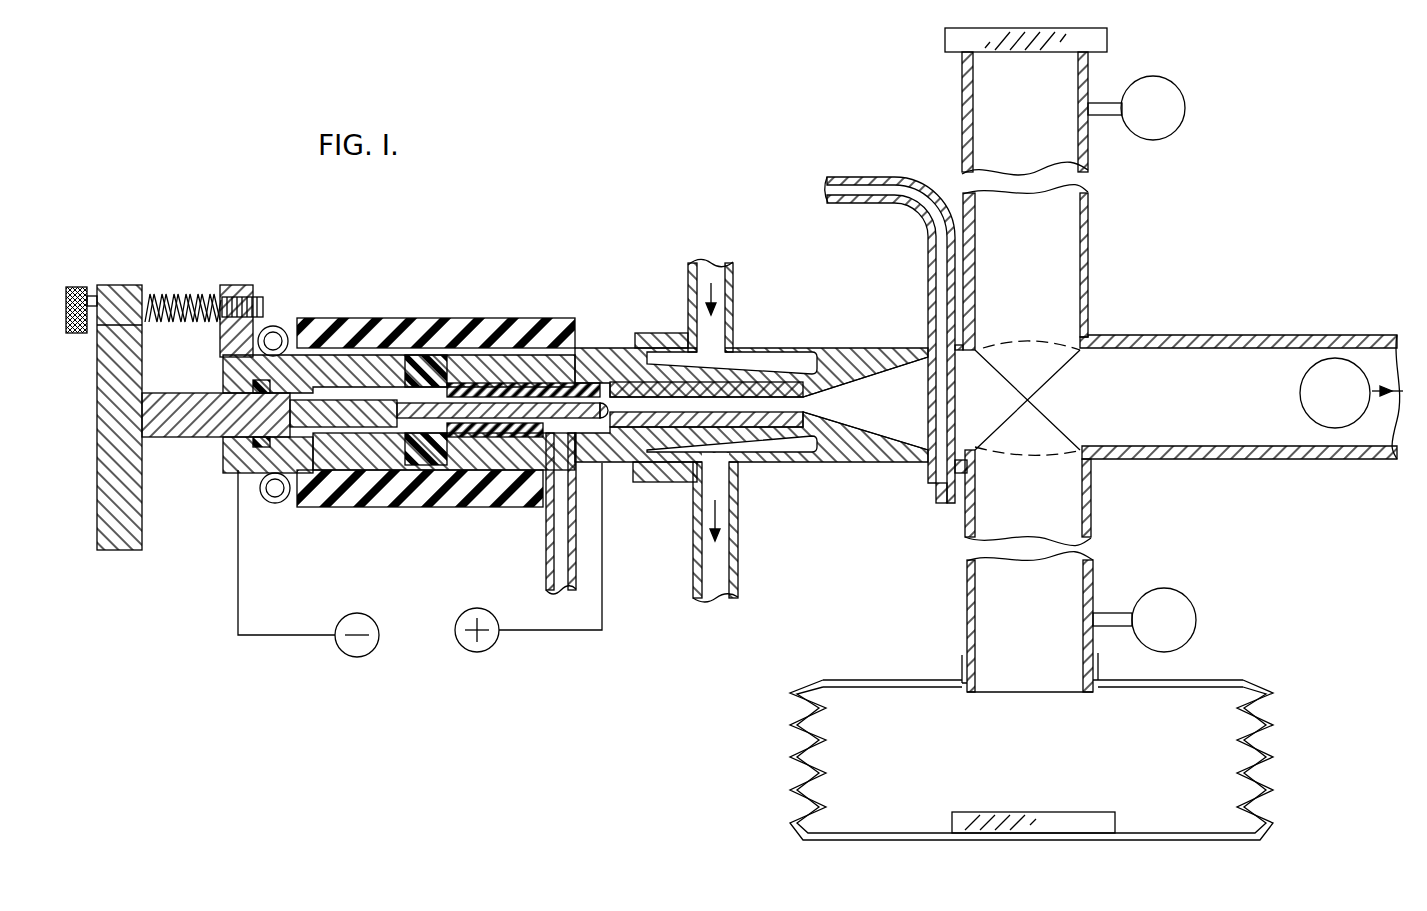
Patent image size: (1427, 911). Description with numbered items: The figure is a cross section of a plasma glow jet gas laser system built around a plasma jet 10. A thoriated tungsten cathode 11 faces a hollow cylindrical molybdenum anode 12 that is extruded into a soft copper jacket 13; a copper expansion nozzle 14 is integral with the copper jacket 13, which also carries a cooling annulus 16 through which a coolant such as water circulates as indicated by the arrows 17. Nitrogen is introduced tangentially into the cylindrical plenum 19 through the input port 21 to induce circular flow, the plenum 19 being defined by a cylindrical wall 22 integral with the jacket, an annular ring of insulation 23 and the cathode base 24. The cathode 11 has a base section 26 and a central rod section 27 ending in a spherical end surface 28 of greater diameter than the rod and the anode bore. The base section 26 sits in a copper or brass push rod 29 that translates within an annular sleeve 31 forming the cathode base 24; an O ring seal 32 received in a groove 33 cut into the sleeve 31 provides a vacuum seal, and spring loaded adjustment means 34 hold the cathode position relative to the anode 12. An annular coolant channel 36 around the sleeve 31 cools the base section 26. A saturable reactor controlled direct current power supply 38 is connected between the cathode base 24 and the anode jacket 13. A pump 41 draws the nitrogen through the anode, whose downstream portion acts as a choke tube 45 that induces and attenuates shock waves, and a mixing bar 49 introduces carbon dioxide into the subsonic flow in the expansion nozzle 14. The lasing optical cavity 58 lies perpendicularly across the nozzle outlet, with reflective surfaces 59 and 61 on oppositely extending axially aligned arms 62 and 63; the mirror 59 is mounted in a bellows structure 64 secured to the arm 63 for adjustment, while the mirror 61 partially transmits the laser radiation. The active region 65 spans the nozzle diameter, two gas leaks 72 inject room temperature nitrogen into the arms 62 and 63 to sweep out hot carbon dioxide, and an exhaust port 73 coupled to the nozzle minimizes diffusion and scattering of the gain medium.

The plasma jet 10 is at (593, 226).
The thoriated tungsten cathode 11 is at (603, 398).
The hollow cylindrical molybdenum anode 12 is at (643, 421).
The copper jacket 13 is at (584, 360).
The copper expansion nozzle 14 is at (828, 389).
The cooling annulus 16 is at (766, 451).
The arrows 17 is at (723, 294).
The cylindrical plenum 19 is at (582, 428).
The input port 21 is at (548, 540).
The cylindrical wall 22 is at (484, 346).
The annular ring of insulation 23 is at (420, 362).
The cathode base 24 is at (360, 452).
The base section 26 is at (318, 398).
The central rod section 27 is at (447, 506).
The spherical end surface 28 is at (608, 392).
The push rod 29 is at (184, 440).
The annular sleeve 31 is at (233, 471).
The O ring seal 32 is at (258, 441).
The groove 33 is at (255, 383).
The spring loaded adjustment means 34 is at (178, 278).
The annular coolant channel 36 is at (273, 503).
The direct current power supply 38 is at (420, 566).
The pump 41 is at (1299, 385).
The choke tube 45 is at (762, 394).
The mixing bar 49 is at (930, 407).
The lasing optical cavity 58 is at (1124, 305).
The mirror 59 is at (1053, 814).
The mirror 61 is at (955, 46).
The arm 62 is at (1092, 232).
The arm 63 is at (1097, 495).
The bellows structure 64 is at (790, 712).
The active region 65 is at (1036, 341).
The gas leaks 72 is at (1188, 113).
The exhaust port 73 is at (1151, 368).